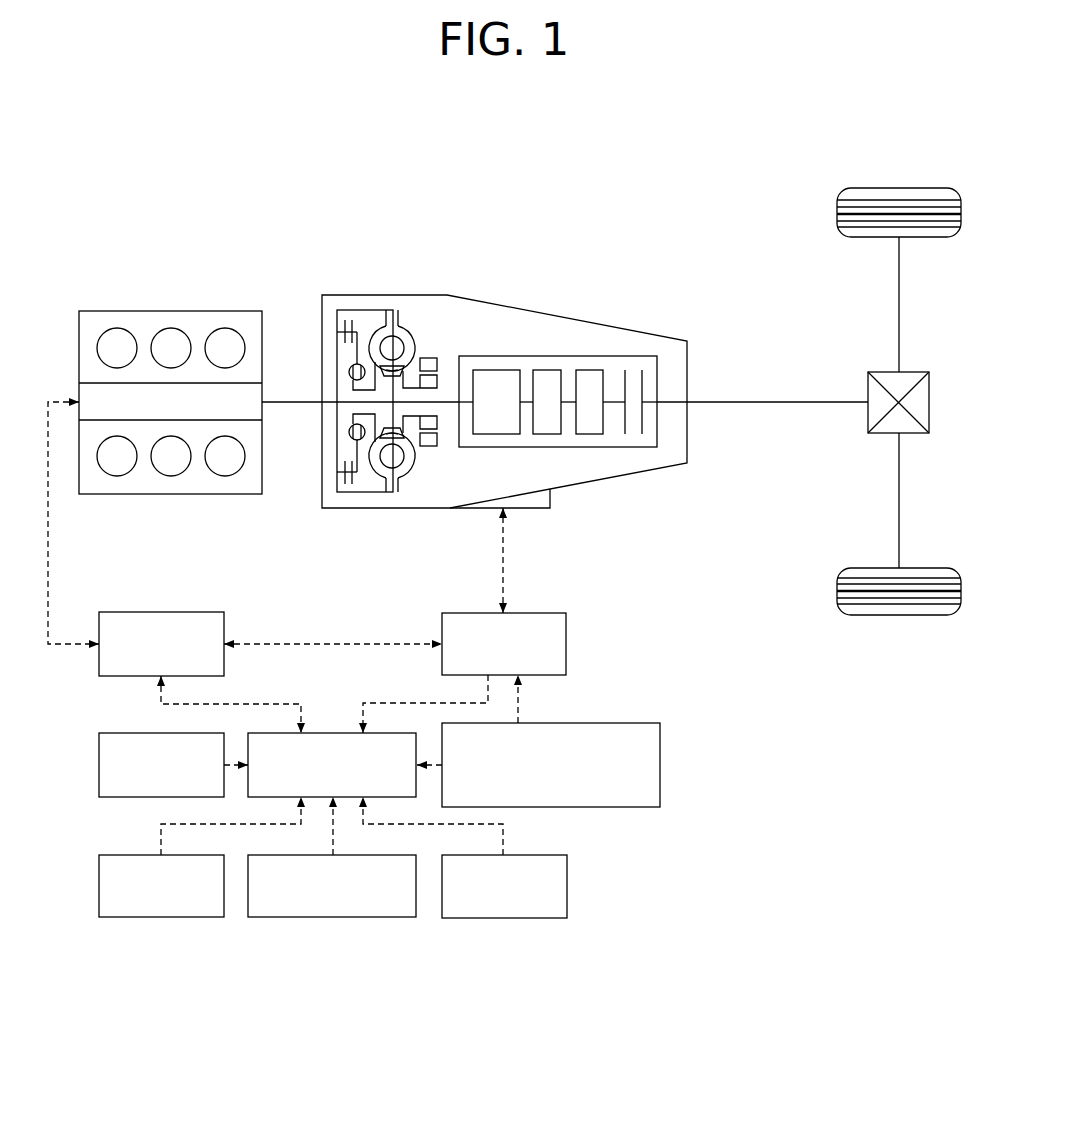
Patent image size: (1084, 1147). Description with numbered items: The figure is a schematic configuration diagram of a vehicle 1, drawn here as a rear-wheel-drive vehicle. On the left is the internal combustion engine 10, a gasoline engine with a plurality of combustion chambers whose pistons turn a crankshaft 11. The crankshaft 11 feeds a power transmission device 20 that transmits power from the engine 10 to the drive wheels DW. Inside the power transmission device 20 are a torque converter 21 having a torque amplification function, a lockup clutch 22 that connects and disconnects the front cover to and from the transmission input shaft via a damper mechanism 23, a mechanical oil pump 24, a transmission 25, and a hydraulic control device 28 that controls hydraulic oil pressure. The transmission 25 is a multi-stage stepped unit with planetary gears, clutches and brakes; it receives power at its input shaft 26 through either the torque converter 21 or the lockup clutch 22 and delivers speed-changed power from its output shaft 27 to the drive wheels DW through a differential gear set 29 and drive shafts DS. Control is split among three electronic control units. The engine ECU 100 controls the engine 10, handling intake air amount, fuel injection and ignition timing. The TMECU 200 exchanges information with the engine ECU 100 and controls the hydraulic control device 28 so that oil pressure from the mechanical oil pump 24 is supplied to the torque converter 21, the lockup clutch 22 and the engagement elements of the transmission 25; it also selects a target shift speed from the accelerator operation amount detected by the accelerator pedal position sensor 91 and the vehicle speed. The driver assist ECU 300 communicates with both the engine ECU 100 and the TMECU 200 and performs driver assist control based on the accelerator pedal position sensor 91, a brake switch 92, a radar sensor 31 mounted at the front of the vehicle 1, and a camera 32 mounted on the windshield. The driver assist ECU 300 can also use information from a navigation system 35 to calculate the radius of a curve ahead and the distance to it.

The vehicle 1 is at (594, 236).
The internal combustion engine 10 is at (167, 311).
The crankshaft 11 is at (291, 404).
The power transmission device 20 is at (660, 468).
The torque converter 21 is at (400, 482).
The lockup clutch 22 is at (364, 326).
The damper mechanism 23 is at (346, 353).
The mechanical oil pump 24 is at (444, 358).
The transmission 25 is at (662, 366).
The input shaft 26 is at (443, 404).
The output shaft 27 is at (740, 404).
The hydraulic control device 28 is at (553, 499).
The differential gear set 29 is at (868, 384).
The radar sensor 31 is at (99, 766).
The camera 32 is at (99, 888).
The navigation system 35 is at (330, 917).
The accelerator pedal position sensor 91 is at (660, 766).
The brake switch 92 is at (567, 886).
The engine ECU 100 is at (162, 612).
The TMECU 200 is at (566, 644).
The driver assist ECU 300 is at (332, 733).
The drive wheels DW is at (897, 188).
The drive shafts DS is at (899, 473).